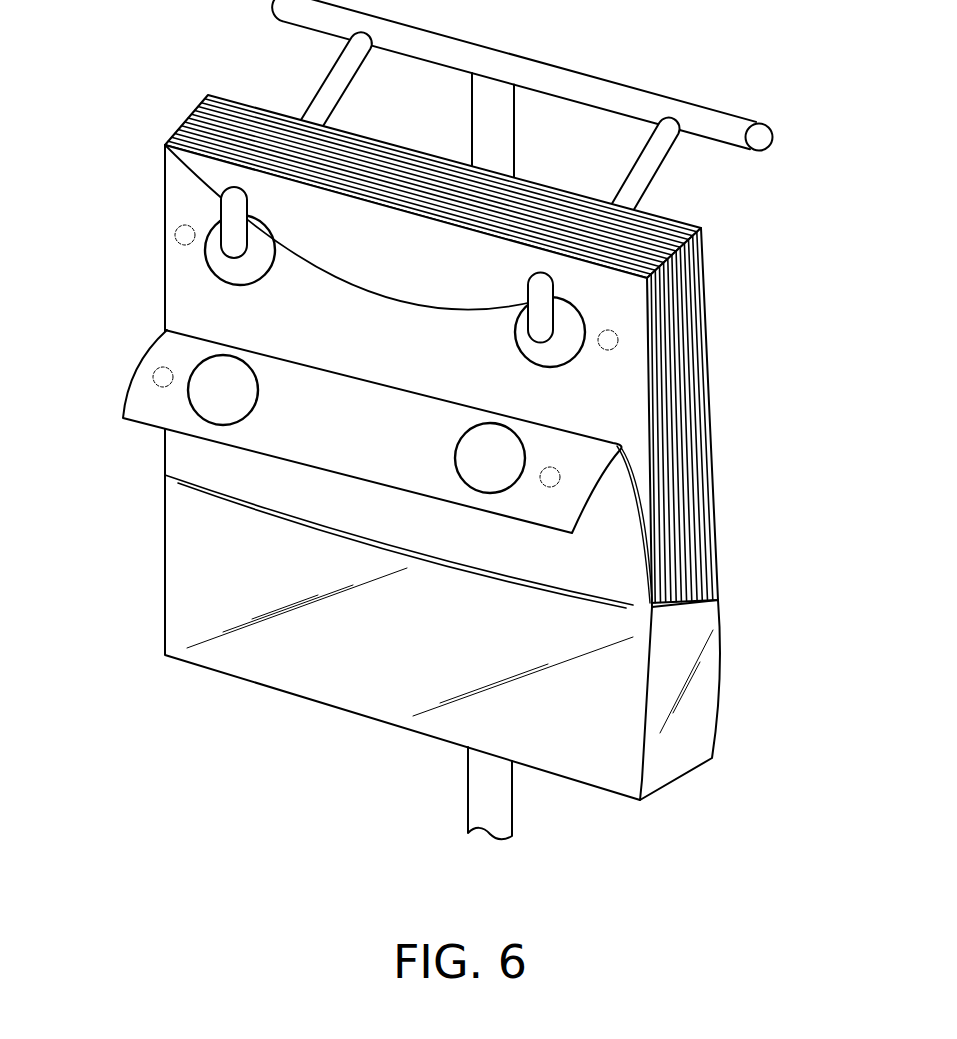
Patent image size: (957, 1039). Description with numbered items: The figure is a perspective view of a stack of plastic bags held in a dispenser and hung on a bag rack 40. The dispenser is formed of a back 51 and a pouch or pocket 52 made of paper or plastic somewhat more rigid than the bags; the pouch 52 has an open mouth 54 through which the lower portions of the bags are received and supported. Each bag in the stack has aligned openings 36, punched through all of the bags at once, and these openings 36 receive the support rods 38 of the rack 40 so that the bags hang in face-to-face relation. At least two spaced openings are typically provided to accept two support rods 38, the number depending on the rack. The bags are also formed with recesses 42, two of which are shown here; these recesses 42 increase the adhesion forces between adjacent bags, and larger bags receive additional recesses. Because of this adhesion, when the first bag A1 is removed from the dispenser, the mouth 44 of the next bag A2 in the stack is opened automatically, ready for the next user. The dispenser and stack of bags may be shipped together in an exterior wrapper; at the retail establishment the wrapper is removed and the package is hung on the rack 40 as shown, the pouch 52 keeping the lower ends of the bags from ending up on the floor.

The bag rack 40 is at (527, 70).
The support rod 38 is at (330, 80).
The recess 42 is at (178, 227).
The opening 36 is at (205, 262).
The mouth 44 is at (353, 276).
The next bag A2 is at (386, 349).
The first bag A1 is at (183, 465).
The open mouth 54 is at (415, 548).
The sheet stack assembly A is at (480, 447).
The back 51 is at (717, 508).
The pouch or pocket 52 is at (731, 692).